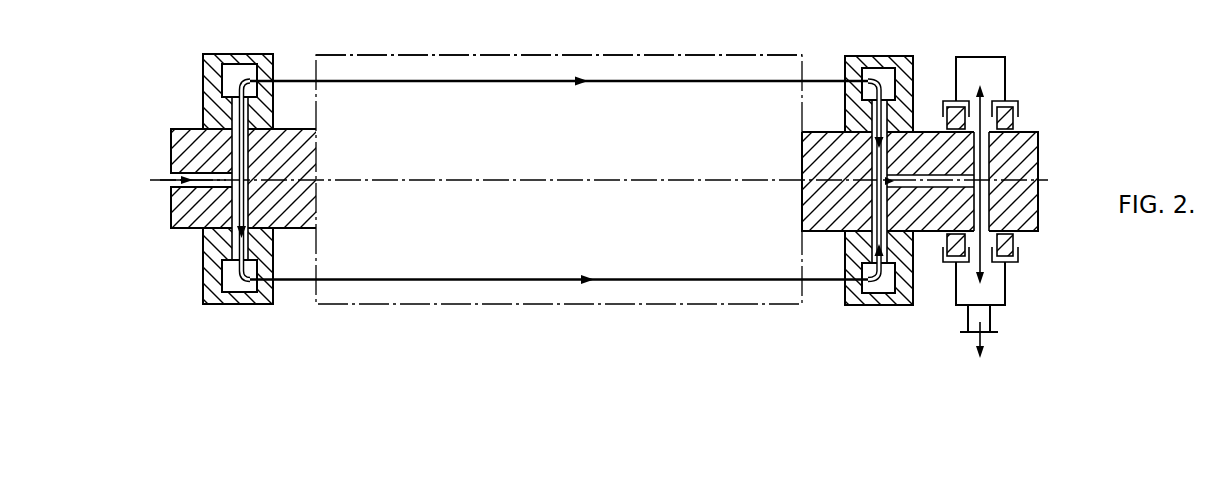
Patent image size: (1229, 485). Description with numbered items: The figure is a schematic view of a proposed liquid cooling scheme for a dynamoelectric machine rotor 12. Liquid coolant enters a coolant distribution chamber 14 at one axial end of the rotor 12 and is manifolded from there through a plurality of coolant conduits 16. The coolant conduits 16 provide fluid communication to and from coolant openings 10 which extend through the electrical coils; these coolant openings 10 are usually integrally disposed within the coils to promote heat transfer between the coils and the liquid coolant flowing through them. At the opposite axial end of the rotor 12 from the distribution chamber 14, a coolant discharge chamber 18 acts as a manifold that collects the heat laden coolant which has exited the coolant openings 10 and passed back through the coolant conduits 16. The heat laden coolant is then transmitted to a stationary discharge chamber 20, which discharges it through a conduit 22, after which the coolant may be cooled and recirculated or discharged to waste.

The coolant openings 10 is at (513, 80).
The rotor 12 is at (643, 63).
The coolant distribution chamber 14 is at (226, 72).
The coolant conduits 16 is at (292, 78).
The coolant discharge chamber 18 is at (887, 77).
The stationary discharge chamber 20 is at (977, 68).
The conduit 22 is at (983, 313).